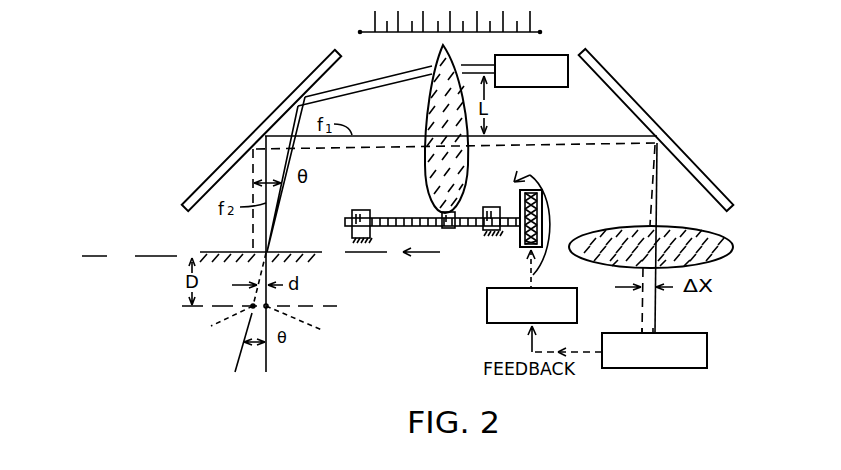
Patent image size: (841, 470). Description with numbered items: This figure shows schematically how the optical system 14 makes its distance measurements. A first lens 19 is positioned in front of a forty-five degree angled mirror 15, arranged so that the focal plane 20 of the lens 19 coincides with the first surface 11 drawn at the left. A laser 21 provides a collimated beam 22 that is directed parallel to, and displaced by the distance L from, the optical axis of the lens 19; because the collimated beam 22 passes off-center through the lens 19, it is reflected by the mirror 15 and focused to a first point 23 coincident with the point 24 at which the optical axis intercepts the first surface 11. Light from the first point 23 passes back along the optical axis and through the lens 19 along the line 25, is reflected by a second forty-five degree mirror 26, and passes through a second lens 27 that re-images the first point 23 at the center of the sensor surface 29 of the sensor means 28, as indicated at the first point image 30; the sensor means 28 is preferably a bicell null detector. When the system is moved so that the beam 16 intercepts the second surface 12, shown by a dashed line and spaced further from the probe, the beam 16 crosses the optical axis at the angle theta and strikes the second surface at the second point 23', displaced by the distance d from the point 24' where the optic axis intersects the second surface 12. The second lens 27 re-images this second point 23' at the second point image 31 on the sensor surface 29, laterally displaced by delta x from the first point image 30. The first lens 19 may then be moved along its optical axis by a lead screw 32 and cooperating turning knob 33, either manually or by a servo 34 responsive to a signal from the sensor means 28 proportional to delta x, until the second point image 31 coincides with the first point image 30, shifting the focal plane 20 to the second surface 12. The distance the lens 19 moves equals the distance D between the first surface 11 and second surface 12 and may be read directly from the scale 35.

The first surface 11 is at (308, 252).
The second surface 12 is at (198, 316).
The optical system 14 is at (650, 58).
The 45° angled mirror 15 is at (299, 87).
The beam 16 is at (278, 213).
The first lens 19 is at (427, 100).
The focal plane 20 is at (115, 257).
The laser 21 is at (533, 87).
The collimated beam 22 is at (459, 45).
The first point 23 is at (243, 264).
The point 24 is at (286, 264).
The second point 23' is at (225, 328).
The point 24' is at (310, 328).
The line 25 is at (552, 145).
The second 45° mirror 26 is at (634, 100).
The second lens 27 is at (638, 224).
The sensor means 28 is at (652, 369).
The sensor surface 29 is at (692, 333).
The first point image 30 is at (653, 333).
The second point image 31 is at (643, 333).
The lead screw 32 is at (413, 217).
The turning knob 33 is at (527, 238).
The servo 34 is at (487, 303).
The scale 35 is at (405, 34).